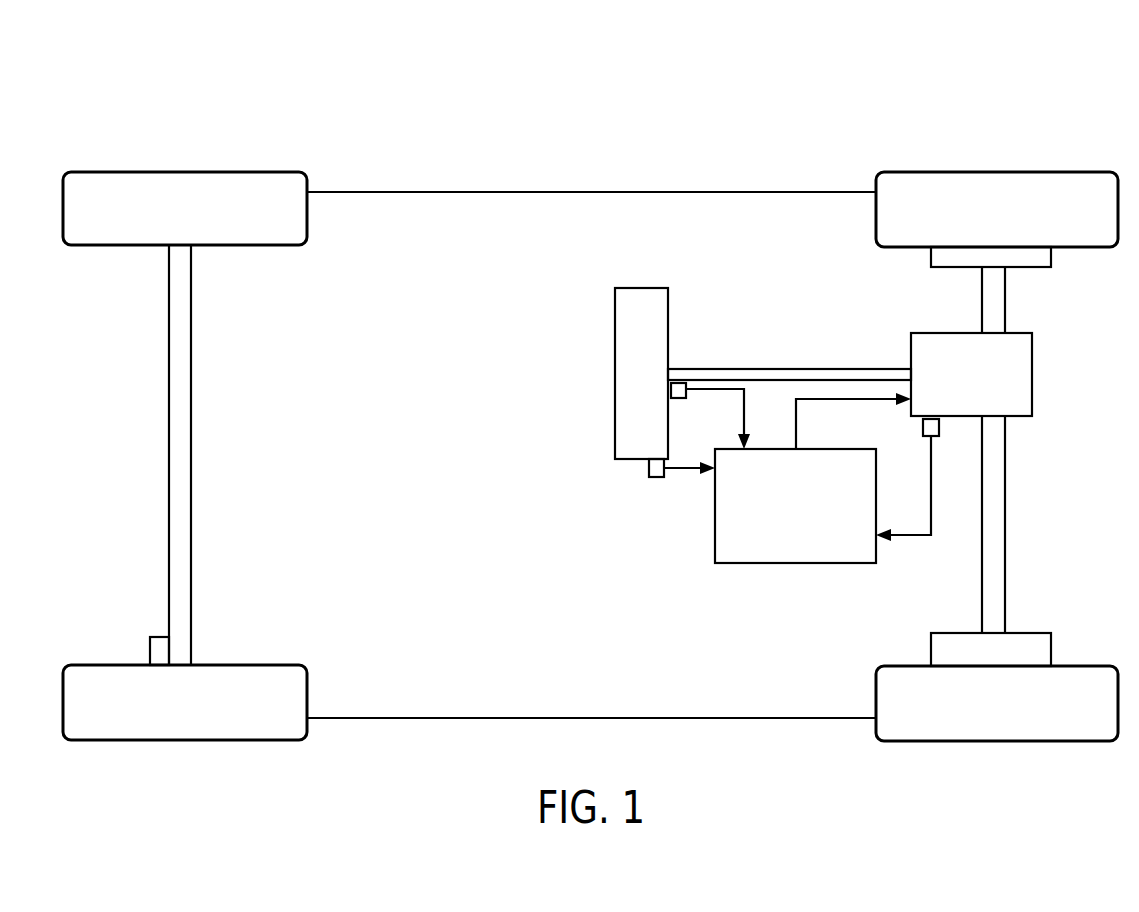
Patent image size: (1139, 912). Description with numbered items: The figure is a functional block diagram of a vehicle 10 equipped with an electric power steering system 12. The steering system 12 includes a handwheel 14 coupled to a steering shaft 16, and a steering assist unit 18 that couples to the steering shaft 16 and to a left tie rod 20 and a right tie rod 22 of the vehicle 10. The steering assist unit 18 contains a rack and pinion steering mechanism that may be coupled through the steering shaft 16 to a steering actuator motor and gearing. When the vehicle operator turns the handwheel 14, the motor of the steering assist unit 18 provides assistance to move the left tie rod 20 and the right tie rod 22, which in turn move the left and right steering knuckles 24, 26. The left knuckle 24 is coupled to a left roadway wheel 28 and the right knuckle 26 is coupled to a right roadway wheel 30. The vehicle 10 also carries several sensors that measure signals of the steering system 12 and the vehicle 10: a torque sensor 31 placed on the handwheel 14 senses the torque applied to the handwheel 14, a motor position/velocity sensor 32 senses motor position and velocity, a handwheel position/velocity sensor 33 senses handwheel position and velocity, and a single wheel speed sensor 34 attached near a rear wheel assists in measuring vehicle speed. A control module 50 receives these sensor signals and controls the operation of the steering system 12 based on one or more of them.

The vehicle 10 is at (876, 97).
The steering system 12 is at (781, 298).
The handwheel 14 is at (640, 298).
The steering shaft 16 is at (784, 373).
The steering assist unit 18 is at (1020, 382).
The left tie rod 20 is at (995, 312).
The right tie rod 22 is at (995, 522).
The left steering knuckle 24 is at (940, 255).
The right steering knuckle 26 is at (962, 645).
The left roadway wheel 28 is at (1003, 182).
The right roadway wheel 30 is at (1073, 680).
The torque sensor 31 is at (680, 392).
The motor position/velocity sensor 32 is at (937, 433).
The handwheel position/velocity sensor 33 is at (655, 477).
The wheel speed sensor 34 is at (158, 652).
The control module 50 is at (797, 553).